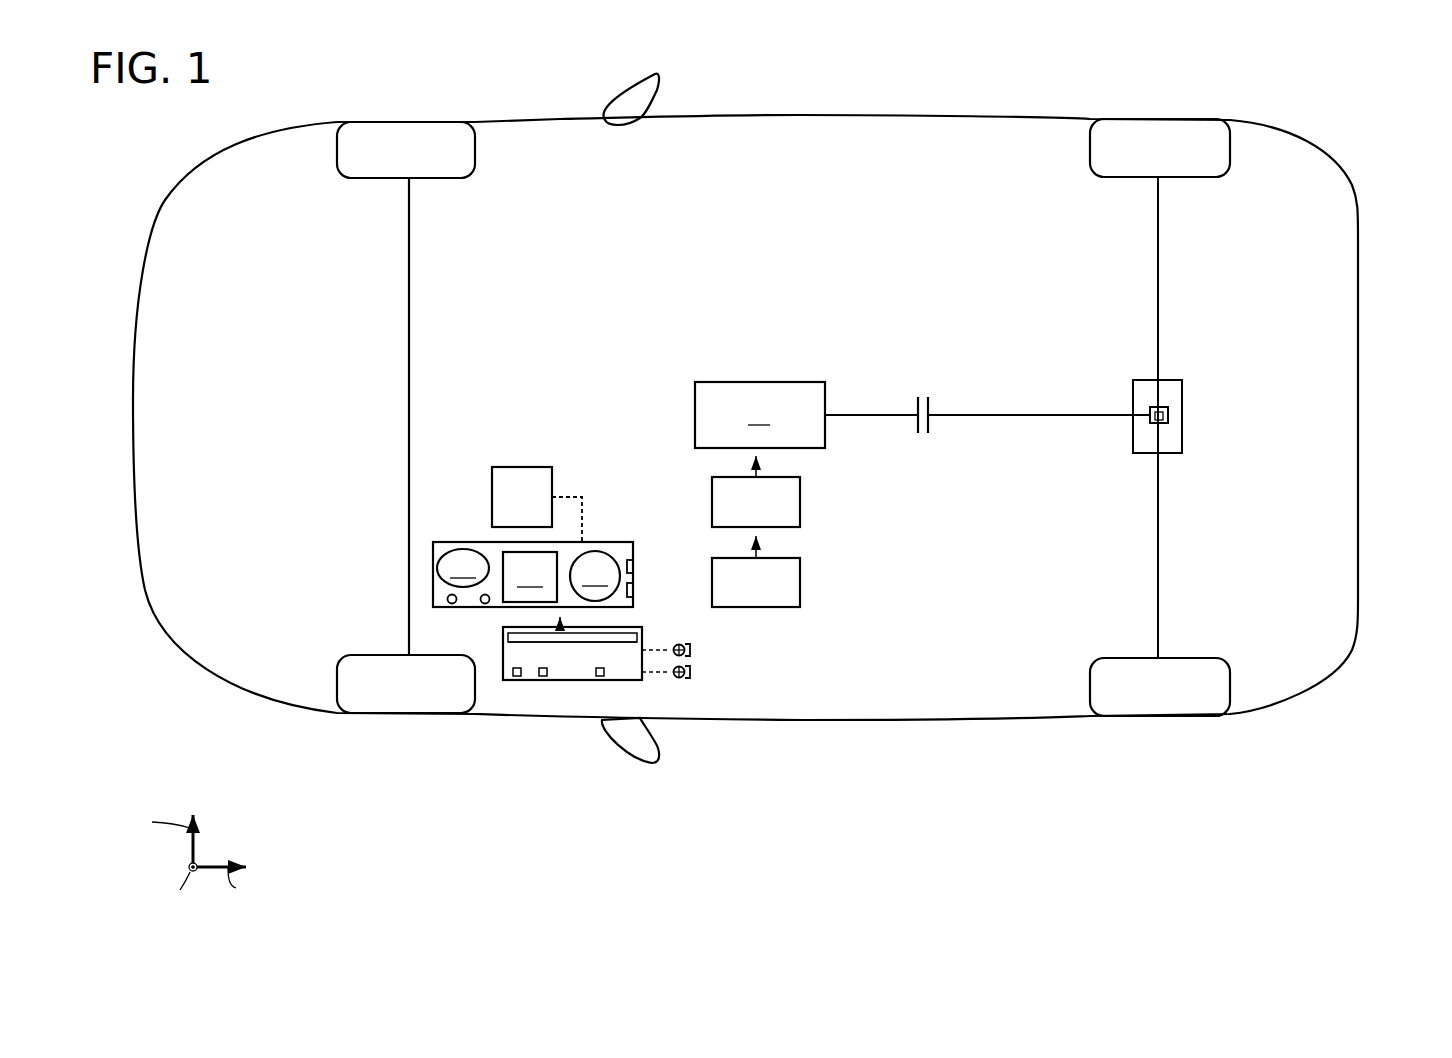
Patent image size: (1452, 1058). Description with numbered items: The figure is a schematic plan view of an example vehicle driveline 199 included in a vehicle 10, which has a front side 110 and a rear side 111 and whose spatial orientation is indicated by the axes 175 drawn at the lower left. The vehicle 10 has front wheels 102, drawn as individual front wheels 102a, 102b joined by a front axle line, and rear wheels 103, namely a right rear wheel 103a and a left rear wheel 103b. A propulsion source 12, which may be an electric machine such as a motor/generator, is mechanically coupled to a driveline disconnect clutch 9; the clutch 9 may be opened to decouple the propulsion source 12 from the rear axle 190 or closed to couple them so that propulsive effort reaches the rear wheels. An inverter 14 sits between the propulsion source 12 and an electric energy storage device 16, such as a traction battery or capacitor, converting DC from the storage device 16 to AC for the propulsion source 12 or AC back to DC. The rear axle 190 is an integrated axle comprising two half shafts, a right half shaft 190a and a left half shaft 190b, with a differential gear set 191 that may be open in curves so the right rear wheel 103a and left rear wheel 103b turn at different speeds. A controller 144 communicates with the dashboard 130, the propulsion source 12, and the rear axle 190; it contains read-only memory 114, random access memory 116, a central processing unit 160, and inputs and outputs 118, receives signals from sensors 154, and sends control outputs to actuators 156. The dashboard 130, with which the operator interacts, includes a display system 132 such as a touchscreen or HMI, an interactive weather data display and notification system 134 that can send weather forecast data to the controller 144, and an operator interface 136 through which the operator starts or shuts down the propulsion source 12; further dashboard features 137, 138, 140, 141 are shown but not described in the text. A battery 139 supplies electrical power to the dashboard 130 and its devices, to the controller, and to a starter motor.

The vehicle 10 is at (975, 115).
The driveline disconnect clutch 9 is at (940, 405).
The propulsion source 12 is at (760, 415).
The inverter 14 is at (756, 491).
The electric energy storage device 16 is at (756, 571).
The front wheels 102 is at (330, 178).
The front left wheel 102a is at (437, 178).
The front right wheel 102b is at (367, 713).
The rear wheels 103 is at (1240, 195).
The right rear wheel 103a is at (1157, 115).
The left rear wheel 103b is at (1160, 716).
The front side 110 is at (100, 206).
The rear side 111 is at (1408, 150).
The read-only memory 114 is at (517, 676).
The random access memory 116 is at (545, 676).
The inputs and outputs 118 is at (630, 642).
The dashboard 130 is at (633, 545).
The display system 132 is at (463, 568).
The interactive weather data display and notification system 134 is at (530, 577).
The operator interface 136 is at (595, 576).
The input port 137 is at (633, 566).
The output port 138 is at (633, 590).
The battery 139 is at (537, 504).
The port 140 is at (449, 603).
The port 141 is at (483, 603).
The controller 144 is at (572, 648).
The sensors 154 is at (685, 650).
The actuators 156 is at (685, 672).
The central processing unit 160 is at (600, 676).
The axes 175 is at (218, 815).
The rear axle 190 is at (1170, 472).
The right half shaft 190a is at (1158, 310).
The left half shaft 190b is at (1158, 568).
The differential gear set 191 is at (1167, 410).
The vehicle driveline 199 is at (803, 258).